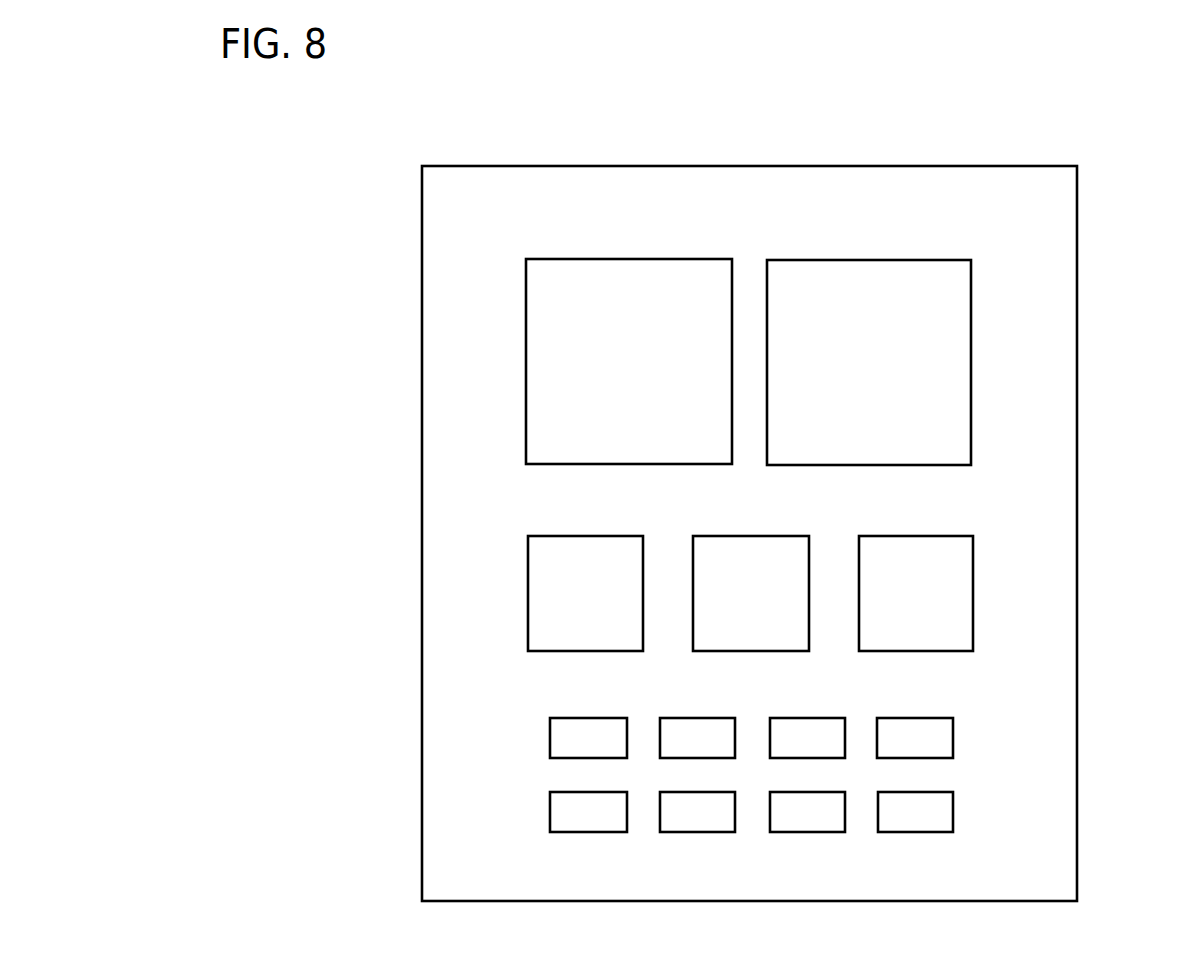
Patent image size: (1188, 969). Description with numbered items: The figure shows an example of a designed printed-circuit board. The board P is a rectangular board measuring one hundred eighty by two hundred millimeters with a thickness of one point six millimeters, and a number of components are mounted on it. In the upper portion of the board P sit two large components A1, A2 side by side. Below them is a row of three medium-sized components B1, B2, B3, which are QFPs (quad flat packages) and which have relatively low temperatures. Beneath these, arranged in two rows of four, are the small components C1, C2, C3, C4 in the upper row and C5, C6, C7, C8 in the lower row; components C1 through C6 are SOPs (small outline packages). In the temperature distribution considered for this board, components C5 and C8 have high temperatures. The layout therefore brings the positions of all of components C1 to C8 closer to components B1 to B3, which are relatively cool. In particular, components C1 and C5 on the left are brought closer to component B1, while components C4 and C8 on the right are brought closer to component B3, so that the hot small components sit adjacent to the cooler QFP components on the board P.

The board P is at (1077, 228).
The component A1 is at (629, 361).
The component A2 is at (869, 362).
The component B1 is at (585, 593).
The component B2 is at (751, 593).
The component B3 is at (916, 593).
The component C1 is at (588, 739).
The component C2 is at (697, 739).
The component C3 is at (807, 739).
The component C4 is at (915, 739).
The component C5 is at (588, 813).
The component C6 is at (697, 813).
The component C7 is at (807, 813).
The component C8 is at (915, 813).